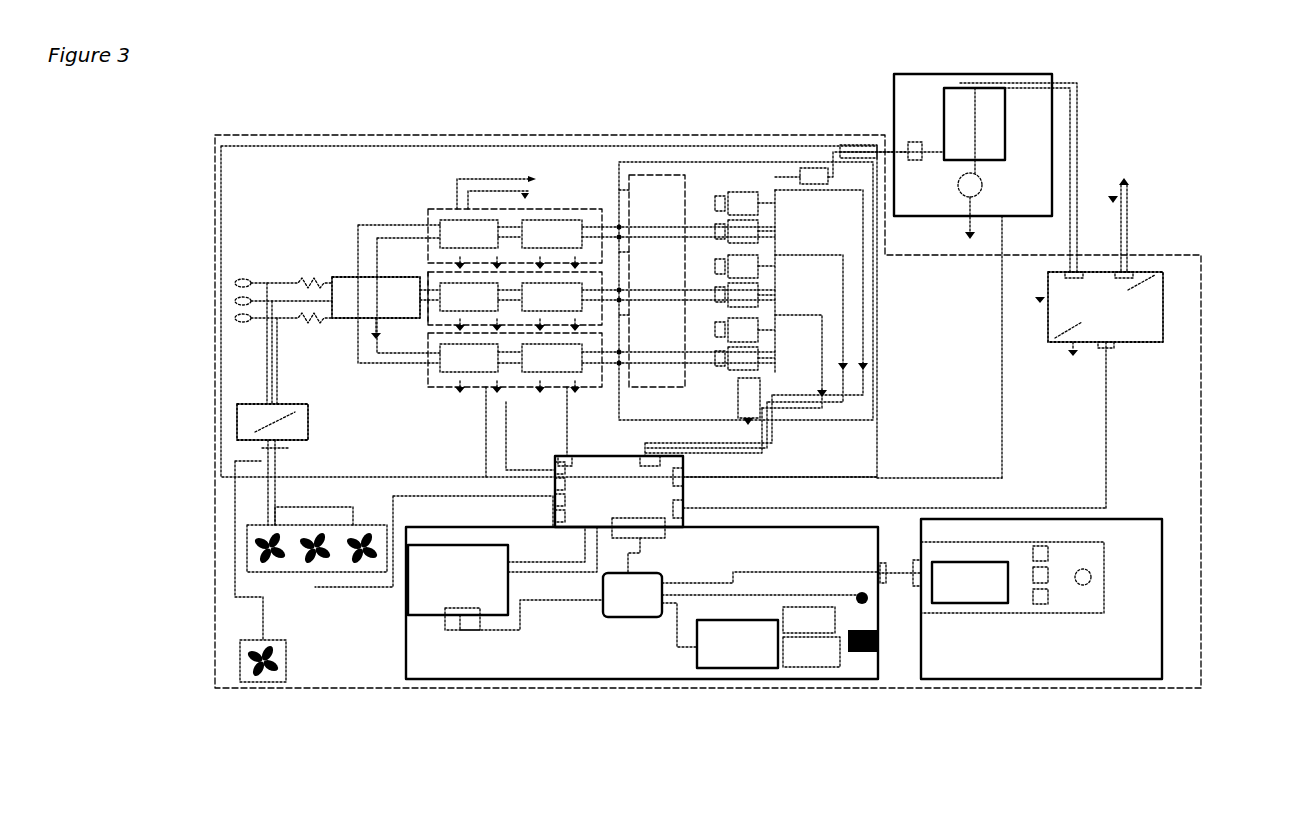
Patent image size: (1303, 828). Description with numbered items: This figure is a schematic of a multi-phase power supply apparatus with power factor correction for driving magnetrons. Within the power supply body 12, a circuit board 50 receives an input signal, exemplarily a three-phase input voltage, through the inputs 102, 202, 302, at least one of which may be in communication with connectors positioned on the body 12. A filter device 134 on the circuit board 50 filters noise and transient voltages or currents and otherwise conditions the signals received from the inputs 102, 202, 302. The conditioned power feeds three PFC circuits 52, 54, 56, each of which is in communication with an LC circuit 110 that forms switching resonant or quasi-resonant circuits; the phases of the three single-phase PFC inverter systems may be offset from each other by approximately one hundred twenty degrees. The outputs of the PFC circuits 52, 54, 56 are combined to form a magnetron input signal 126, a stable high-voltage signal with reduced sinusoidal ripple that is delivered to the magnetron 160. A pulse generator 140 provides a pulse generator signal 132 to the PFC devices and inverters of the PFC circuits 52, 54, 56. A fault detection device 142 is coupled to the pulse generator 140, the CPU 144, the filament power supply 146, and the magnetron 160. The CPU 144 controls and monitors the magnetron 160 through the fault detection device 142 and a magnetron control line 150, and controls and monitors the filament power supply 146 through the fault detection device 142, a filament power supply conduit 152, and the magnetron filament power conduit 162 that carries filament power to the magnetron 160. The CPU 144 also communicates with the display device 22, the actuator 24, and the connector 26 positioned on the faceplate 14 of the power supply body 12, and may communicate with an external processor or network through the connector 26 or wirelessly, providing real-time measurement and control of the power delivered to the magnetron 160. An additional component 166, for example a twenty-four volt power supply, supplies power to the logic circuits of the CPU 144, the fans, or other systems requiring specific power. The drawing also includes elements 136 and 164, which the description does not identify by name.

The power supply body 12 is at (1203, 268).
The faceplate 14 is at (1158, 520).
The display device 22 is at (966, 592).
The actuator 24 is at (1047, 603).
The connector 26 is at (1085, 578).
The circuit board 50 is at (450, 145).
The first PFC circuit 52 is at (430, 210).
The second PFC circuit 54 is at (426, 276).
The PFC circuit 56 is at (428, 342).
The input 102 is at (236, 282).
The LC circuit 110 is at (637, 170).
The magnetron input signal 126 is at (840, 150).
The pulse generator signal 132 is at (487, 438).
The filter device 134 is at (335, 277).
The CPU board 136 is at (508, 677).
The pulse generator 140 is at (458, 580).
The fault detection device 142 is at (831, 491).
The CPU 144 is at (632, 595).
The filament power supply 146 is at (1147, 326).
The magnetron control line 150 is at (1002, 368).
The filament power supply conduit 152 is at (1105, 430).
The magnetron 160 is at (975, 74).
The magnetron filament power conduit 162 is at (1073, 98).
The storage module 164 is at (737, 644).
The additional component 166 is at (238, 430).
The input 202 is at (240, 300).
The input 302 is at (236, 318).